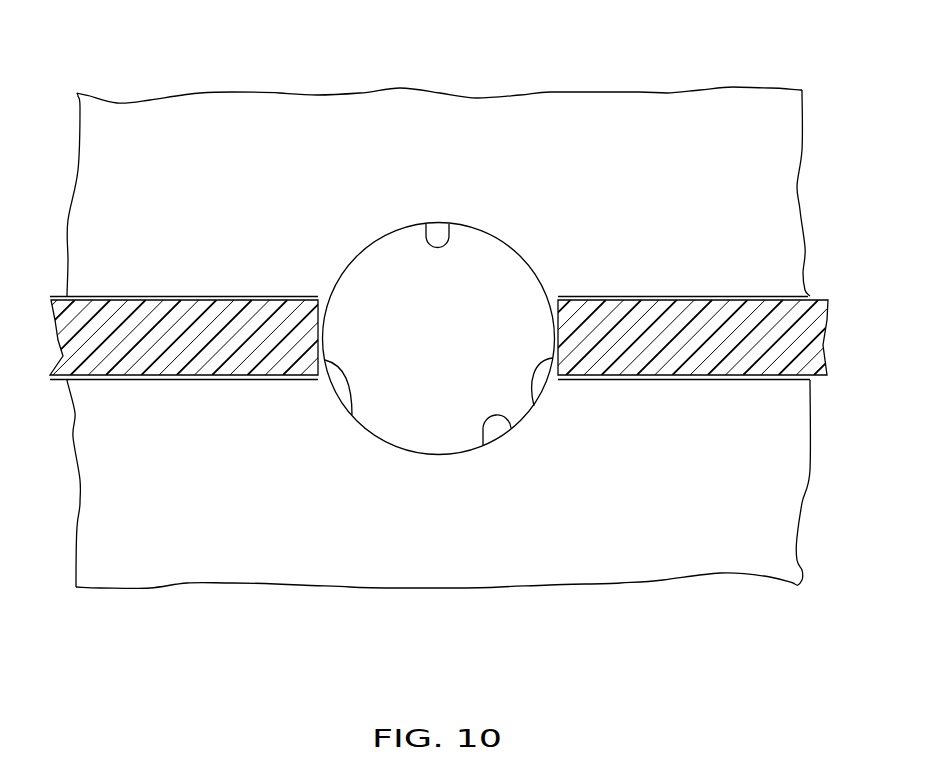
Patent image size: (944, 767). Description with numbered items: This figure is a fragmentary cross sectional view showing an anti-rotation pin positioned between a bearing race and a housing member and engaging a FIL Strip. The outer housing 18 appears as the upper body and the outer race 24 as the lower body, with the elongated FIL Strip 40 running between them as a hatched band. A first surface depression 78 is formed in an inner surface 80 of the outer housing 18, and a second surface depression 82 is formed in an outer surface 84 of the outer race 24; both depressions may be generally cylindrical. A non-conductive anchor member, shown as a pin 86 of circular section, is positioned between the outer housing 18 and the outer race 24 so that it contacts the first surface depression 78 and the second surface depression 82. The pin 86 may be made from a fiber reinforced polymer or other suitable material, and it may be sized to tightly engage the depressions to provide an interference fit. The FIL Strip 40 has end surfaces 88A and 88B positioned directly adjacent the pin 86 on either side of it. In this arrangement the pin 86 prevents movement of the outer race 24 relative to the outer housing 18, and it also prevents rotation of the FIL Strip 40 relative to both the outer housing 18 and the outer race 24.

The outer housing 18 is at (663, 127).
The outer race 24 is at (770, 500).
The FIL Strip 40 is at (64, 362).
The first surface depression 78 is at (447, 240).
The inner surface 80 is at (775, 298).
The second surface depression 82 is at (512, 426).
The outer surface 84 is at (760, 380).
The pin 86 is at (438, 423).
The end surface 88A is at (352, 415).
The end surface 88B is at (534, 406).